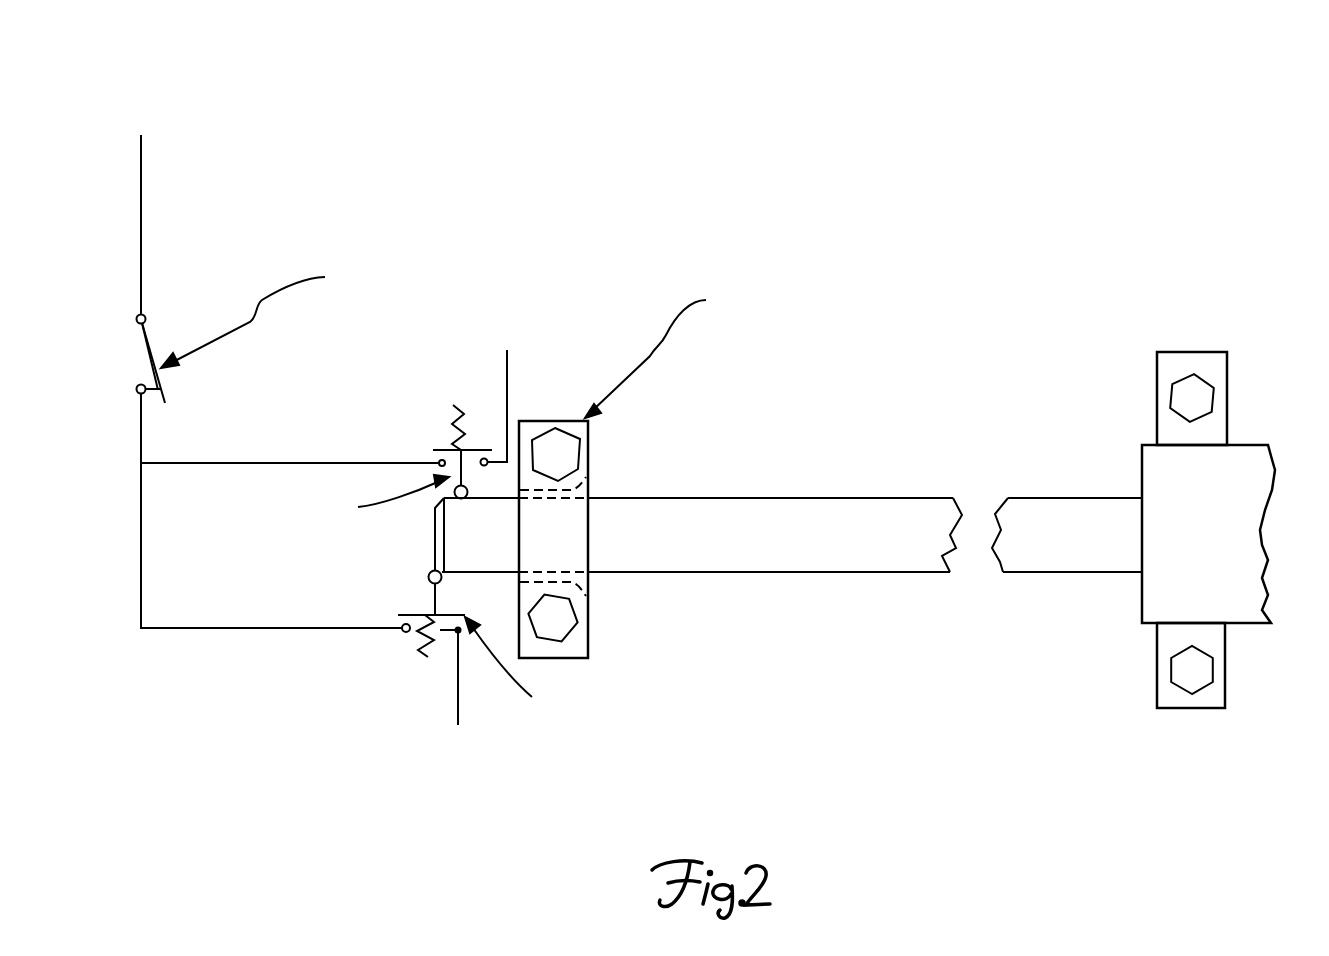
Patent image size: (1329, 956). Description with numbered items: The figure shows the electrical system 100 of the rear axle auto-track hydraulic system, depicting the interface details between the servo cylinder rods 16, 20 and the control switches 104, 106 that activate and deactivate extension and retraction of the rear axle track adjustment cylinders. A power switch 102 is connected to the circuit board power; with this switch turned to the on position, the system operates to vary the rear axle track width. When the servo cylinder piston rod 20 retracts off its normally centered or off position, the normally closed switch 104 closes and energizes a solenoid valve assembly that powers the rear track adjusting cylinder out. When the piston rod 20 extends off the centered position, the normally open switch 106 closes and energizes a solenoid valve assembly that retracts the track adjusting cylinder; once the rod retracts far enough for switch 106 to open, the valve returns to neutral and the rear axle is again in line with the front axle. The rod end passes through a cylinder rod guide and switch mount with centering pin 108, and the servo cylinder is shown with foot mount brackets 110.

The electrical system 100 is at (614, 104).
The power switch 102 is at (147, 334).
The normally closed switch S1 104 is at (439, 460).
The normally open switch S2 106 is at (413, 634).
The cylinder rod guide and switch mount with centering pin 108 is at (584, 452).
The servo cylinder rod 16 is at (742, 580).
The piston rod 20 is at (786, 541).
The foot mount brackets 110 is at (1157, 425).